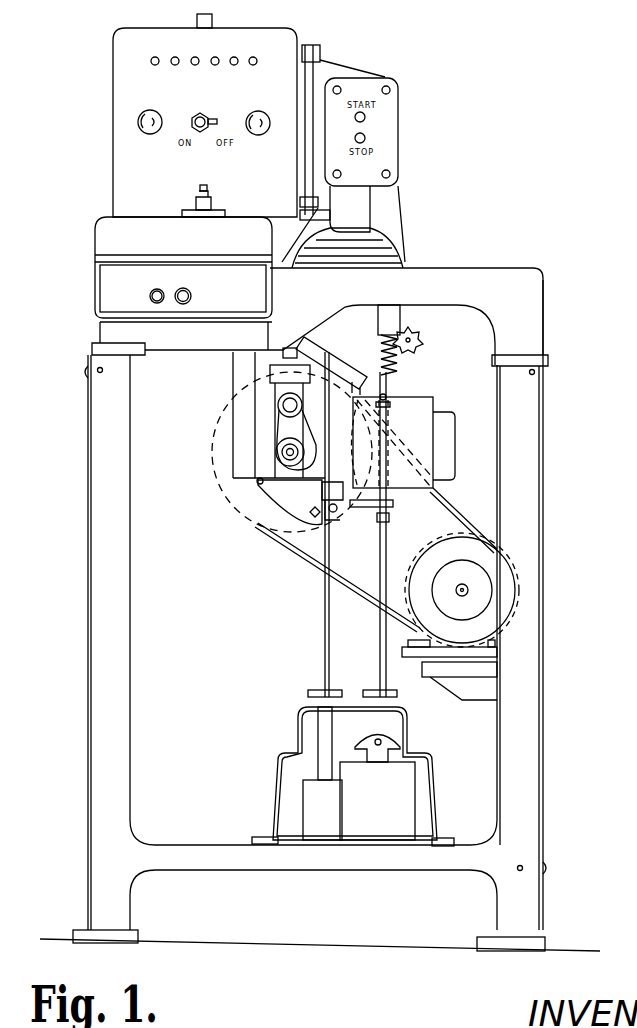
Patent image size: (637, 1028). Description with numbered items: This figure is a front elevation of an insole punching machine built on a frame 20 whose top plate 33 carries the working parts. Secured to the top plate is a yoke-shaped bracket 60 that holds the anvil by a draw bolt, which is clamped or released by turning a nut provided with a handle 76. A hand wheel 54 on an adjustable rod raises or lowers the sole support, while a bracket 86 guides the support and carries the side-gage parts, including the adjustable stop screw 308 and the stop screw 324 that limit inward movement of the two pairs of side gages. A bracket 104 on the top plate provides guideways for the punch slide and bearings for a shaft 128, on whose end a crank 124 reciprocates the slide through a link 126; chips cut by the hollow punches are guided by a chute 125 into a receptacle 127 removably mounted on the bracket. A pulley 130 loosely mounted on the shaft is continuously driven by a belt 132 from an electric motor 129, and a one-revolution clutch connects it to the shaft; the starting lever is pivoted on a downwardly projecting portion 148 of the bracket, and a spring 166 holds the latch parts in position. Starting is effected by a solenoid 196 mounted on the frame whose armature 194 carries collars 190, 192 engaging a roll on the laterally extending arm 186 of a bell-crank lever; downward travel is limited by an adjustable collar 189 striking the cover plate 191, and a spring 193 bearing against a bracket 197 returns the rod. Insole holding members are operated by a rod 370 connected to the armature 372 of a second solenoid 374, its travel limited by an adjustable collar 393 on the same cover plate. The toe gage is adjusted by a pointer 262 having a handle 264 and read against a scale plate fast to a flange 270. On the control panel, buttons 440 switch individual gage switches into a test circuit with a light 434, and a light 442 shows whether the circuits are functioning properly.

The frame 20 is at (523, 818).
The top plate 33 is at (537, 337).
The hand wheel 54 is at (422, 337).
The yoke-shaped bracket 60 is at (372, 243).
The handle 76 is at (322, 205).
The bracket 86 is at (103, 288).
The bracket 104 is at (243, 366).
The crank 124 is at (283, 452).
The chute 125 is at (328, 357).
The link 126 is at (287, 423).
The receptacle 127 is at (435, 413).
The shaft 128 is at (260, 460).
The electric motor 129 is at (487, 553).
The pulley 130 is at (212, 449).
The belt 132 is at (477, 512).
The downwardly projecting portion 148 is at (293, 498).
The spring 166 is at (340, 520).
The laterally extending arm 186 is at (348, 508).
The adjustable collar 189 is at (397, 694).
The collar 190 is at (393, 503).
The cover plate 191 is at (407, 726).
The collar 192 is at (389, 517).
The spring 193 is at (389, 385).
The armature 194 is at (379, 662).
The solenoid 196 is at (400, 782).
The bracket 197 is at (398, 362).
The pointer 262 is at (211, 207).
The handle 264 is at (201, 188).
The flange 270 is at (186, 212).
The adjustable stop screw 308 is at (152, 292).
The stop screw 324 is at (189, 291).
The rod 370 is at (325, 627).
The armature 372 is at (318, 771).
The solenoid 374 is at (312, 806).
The adjustable collar 393 is at (313, 692).
The light 434 is at (255, 137).
The button 440 is at (234, 57).
The light 442 is at (137, 123).